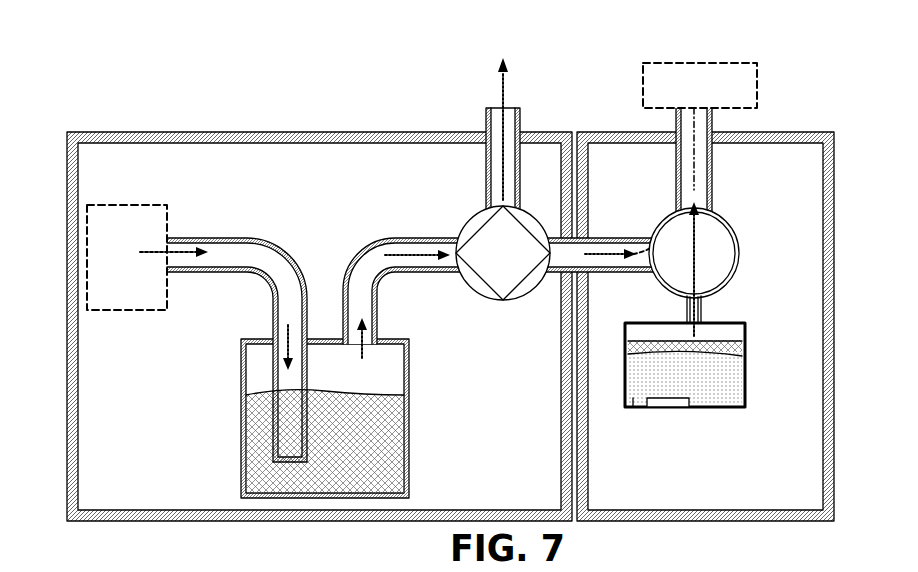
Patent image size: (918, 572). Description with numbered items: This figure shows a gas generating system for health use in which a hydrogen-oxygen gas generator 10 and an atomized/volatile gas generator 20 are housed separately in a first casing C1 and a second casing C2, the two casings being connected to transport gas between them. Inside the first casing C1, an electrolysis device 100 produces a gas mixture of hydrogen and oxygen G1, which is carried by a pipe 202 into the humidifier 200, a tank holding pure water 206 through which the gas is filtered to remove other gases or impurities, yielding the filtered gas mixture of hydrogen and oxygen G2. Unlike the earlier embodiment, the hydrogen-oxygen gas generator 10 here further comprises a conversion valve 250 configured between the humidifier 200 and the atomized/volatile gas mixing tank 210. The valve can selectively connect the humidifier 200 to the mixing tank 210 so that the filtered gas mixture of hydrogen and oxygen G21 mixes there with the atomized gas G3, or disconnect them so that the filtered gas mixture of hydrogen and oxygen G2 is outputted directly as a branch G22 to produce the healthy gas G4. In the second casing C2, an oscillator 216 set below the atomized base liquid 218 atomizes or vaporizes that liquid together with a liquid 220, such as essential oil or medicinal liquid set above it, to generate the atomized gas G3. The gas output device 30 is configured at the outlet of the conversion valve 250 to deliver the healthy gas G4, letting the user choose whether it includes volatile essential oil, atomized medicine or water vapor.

The hydrogen-oxygen gas generator 10 is at (450, 285).
The first casing C1 is at (320, 134).
The second casing C2 is at (832, 134).
The atomized/volatile gas generator 20 is at (679, 287).
The gas output device 30 is at (716, 63).
The electrolysis device 100 is at (105, 312).
The humidifier 200 is at (241, 455).
The gas inlet pipe 202 is at (223, 239).
The pure water 206 is at (387, 430).
The conversion valve 250 is at (462, 222).
The atomized/volatile gas mixing tank 210 is at (727, 213).
The oscillator 216 is at (680, 408).
The liquid 218 is at (633, 405).
The liquid 220 is at (691, 394).
The gas mixture of hydrogen and oxygen G1 is at (160, 250).
The filtered gas mixture of hydrogen and oxygen G2 is at (402, 240).
The filtered gas mixture of hydrogen and oxygen G21 is at (660, 223).
The gas branch flow G22 is at (503, 190).
The atomized gas G3 is at (693, 283).
The healthy gas G4 is at (502, 95).